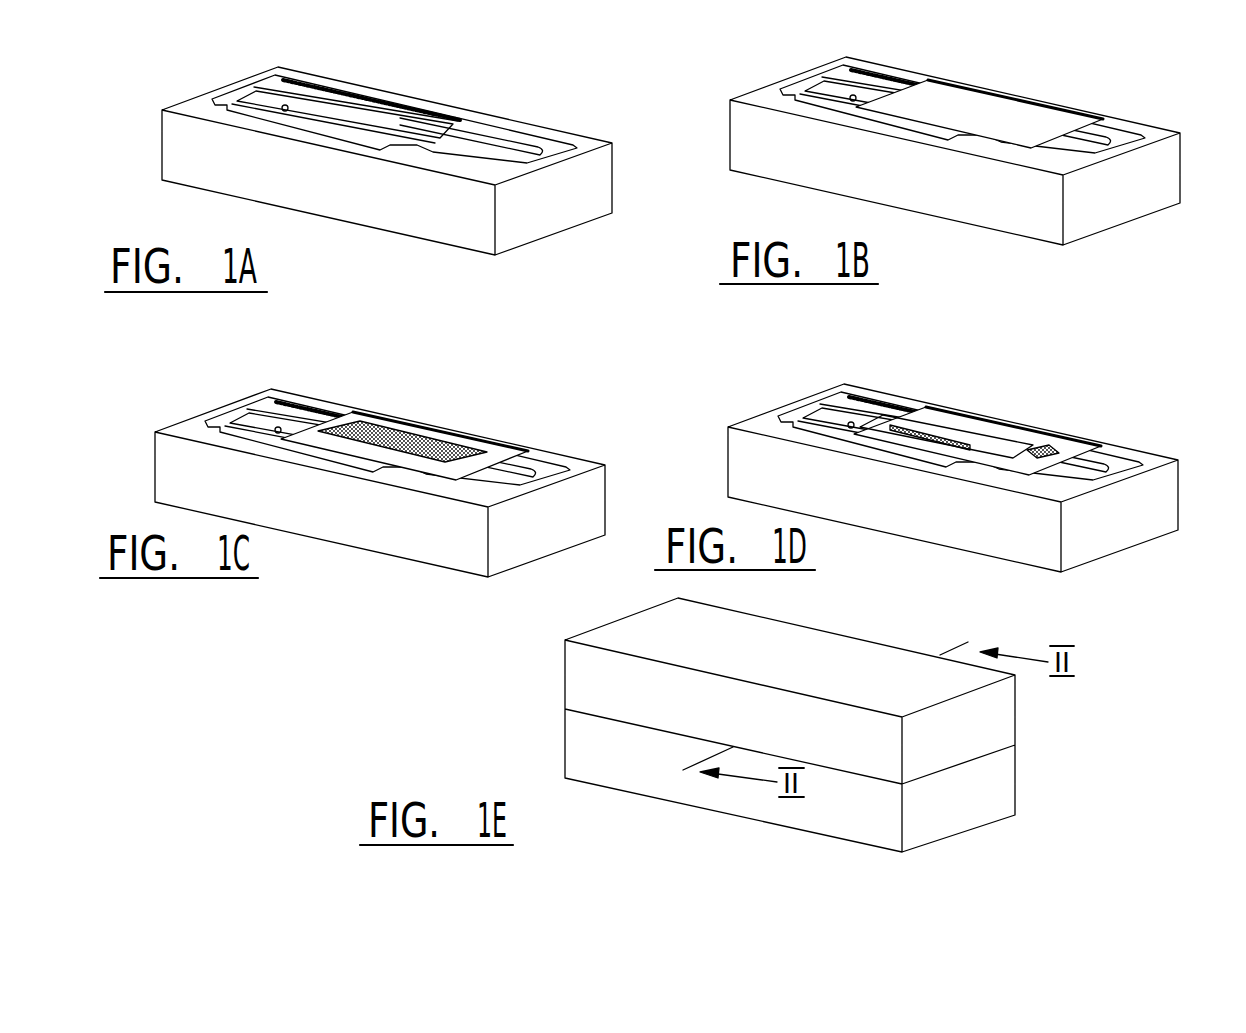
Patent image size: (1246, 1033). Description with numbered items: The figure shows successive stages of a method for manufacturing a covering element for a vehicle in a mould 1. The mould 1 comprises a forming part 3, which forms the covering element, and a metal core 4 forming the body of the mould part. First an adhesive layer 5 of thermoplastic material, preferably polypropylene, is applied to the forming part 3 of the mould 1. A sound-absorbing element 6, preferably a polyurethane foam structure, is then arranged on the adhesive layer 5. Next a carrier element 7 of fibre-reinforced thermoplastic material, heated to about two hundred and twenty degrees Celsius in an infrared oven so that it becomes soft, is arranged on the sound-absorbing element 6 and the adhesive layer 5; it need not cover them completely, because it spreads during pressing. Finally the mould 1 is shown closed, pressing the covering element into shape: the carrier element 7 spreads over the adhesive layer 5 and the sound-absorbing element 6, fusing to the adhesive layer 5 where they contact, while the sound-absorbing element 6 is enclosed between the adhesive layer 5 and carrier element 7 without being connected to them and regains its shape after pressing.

In FIG. 1A, the mould 1 is at (338, 193).
In FIG. 1B, the mould 1 is at (916, 183).
In FIG. 1C, the mould 1 is at (342, 512).
In FIG. 1D, the mould 1 is at (970, 482).
In FIG. 1E, the mould 1 is at (1092, 755).
In FIG. 1A, the forming part 3 is at (468, 128).
In FIG. 1B, the forming part 3 is at (1127, 133).
In FIG. 1C, the forming part 3 is at (555, 470).
In FIG. 1D, the forming part 3 is at (1127, 455).
In FIG. 1A, the metal core 4 is at (475, 233).
In FIG. 1B, the metal core 4 is at (1037, 230).
In FIG. 1C, the metal core 4 is at (468, 558).
In FIG. 1D, the metal core 4 is at (1125, 530).
In FIG. 1B, the adhesive layer 5 is at (997, 112).
In FIG. 1C, the adhesive layer 5 is at (500, 458).
In FIG. 1D, the adhesive layer 5 is at (1070, 448).
In FIG. 1C, the sound-absorbing element 6 is at (423, 440).
In FIG. 1D, the sound-absorbing element 6 is at (1033, 455).
In FIG. 1D, the carrier element 7 is at (967, 430).